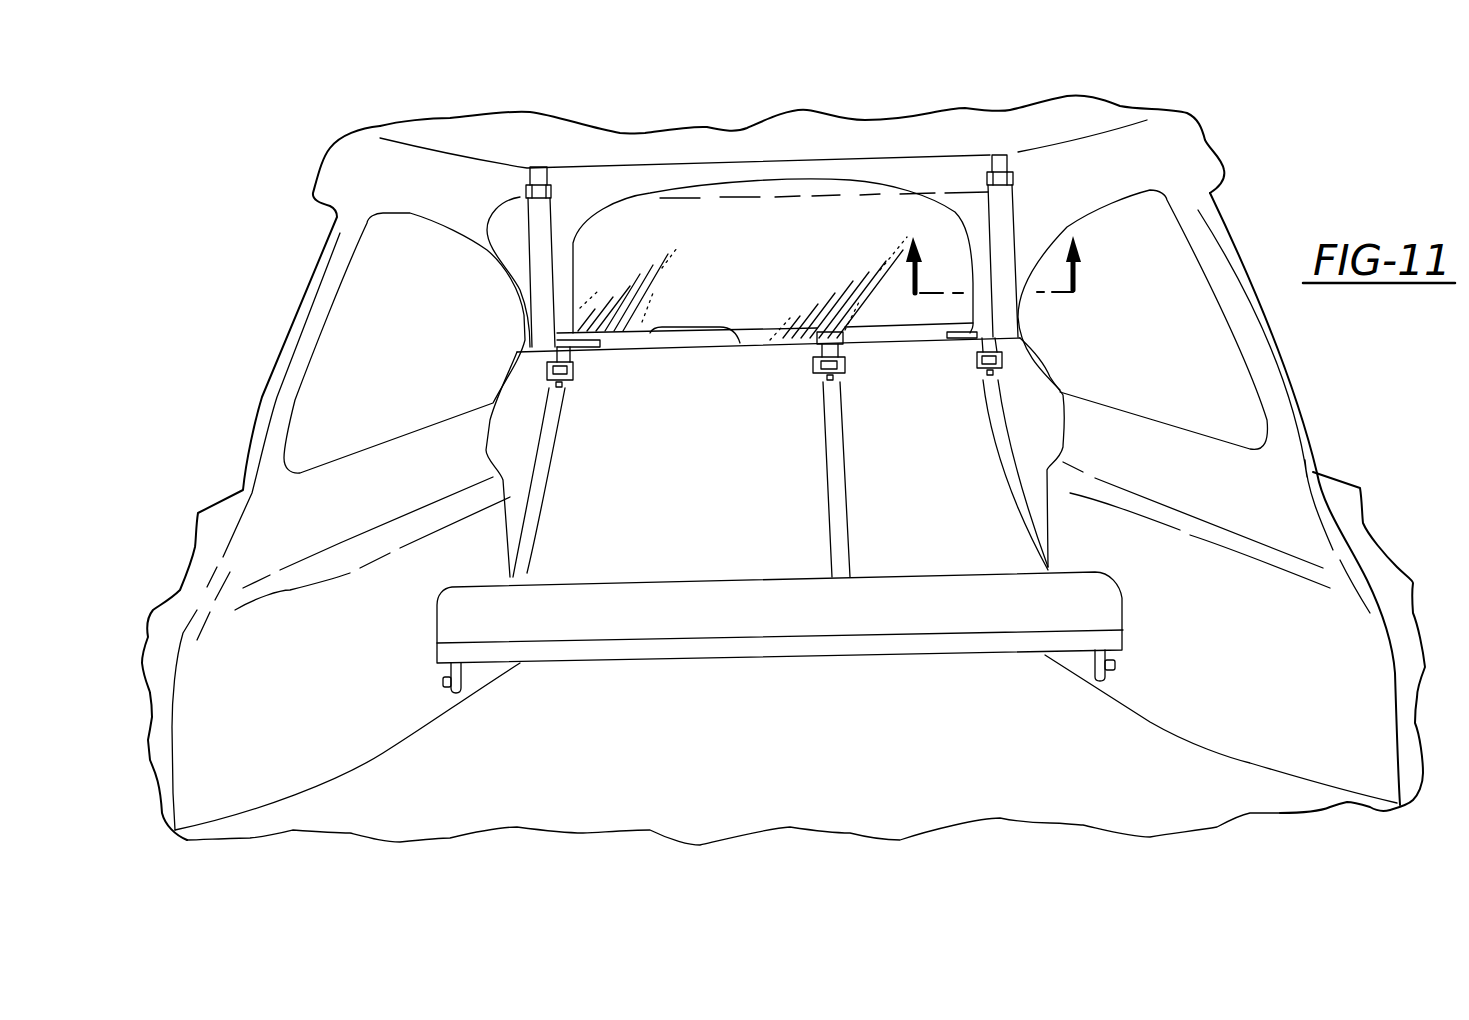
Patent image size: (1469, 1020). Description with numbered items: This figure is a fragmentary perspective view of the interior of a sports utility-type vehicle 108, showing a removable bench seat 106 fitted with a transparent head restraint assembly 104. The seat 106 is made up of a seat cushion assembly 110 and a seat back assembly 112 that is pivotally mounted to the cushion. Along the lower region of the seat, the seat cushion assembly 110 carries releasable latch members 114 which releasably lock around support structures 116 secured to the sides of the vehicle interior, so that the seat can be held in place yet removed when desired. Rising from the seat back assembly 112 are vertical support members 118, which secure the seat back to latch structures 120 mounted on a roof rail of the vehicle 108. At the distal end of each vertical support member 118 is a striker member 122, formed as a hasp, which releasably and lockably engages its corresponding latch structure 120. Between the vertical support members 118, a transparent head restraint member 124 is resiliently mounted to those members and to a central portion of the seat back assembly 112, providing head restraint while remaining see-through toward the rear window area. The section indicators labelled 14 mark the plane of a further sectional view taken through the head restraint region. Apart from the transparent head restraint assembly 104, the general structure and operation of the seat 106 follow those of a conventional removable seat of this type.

The transparent head restraint assembly 104 is at (893, 160).
The removable seat 106 is at (635, 683).
The sports utility-type vehicle 108 is at (1235, 165).
The seat cushion assembly 110 is at (1115, 603).
The seat back assembly 112 is at (1050, 513).
The releasable latch members 114 is at (1100, 673).
The support structures 116 is at (1113, 667).
The vertical support members 118 is at (535, 282).
The latch structures 120 is at (537, 178).
The striker member 122 is at (523, 193).
The transparent head restraint member 124 is at (783, 277).
The section line 14- 14 is at (995, 259).